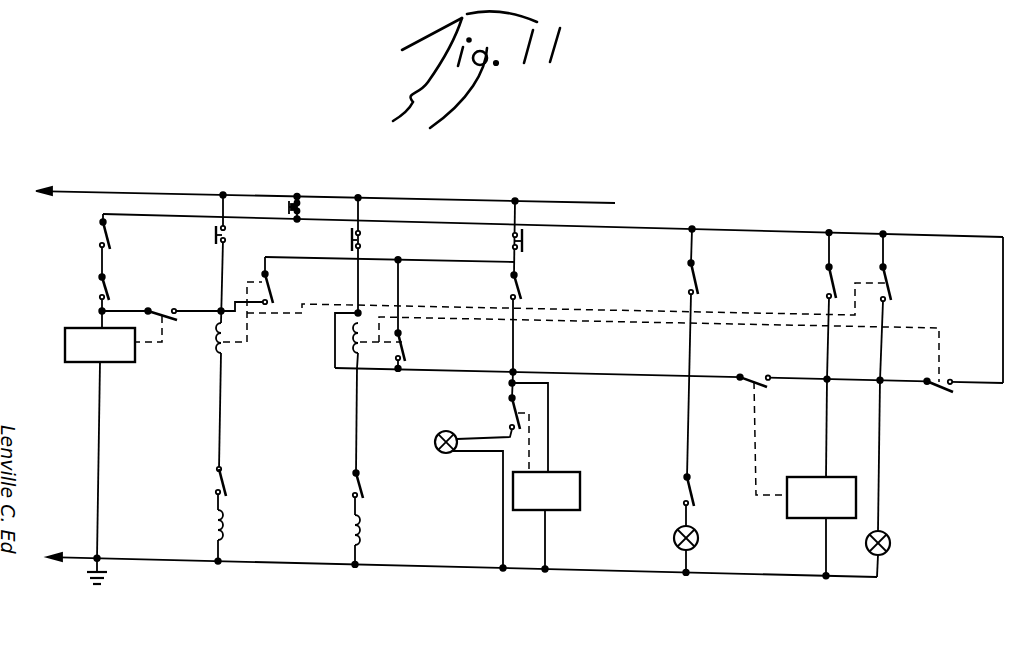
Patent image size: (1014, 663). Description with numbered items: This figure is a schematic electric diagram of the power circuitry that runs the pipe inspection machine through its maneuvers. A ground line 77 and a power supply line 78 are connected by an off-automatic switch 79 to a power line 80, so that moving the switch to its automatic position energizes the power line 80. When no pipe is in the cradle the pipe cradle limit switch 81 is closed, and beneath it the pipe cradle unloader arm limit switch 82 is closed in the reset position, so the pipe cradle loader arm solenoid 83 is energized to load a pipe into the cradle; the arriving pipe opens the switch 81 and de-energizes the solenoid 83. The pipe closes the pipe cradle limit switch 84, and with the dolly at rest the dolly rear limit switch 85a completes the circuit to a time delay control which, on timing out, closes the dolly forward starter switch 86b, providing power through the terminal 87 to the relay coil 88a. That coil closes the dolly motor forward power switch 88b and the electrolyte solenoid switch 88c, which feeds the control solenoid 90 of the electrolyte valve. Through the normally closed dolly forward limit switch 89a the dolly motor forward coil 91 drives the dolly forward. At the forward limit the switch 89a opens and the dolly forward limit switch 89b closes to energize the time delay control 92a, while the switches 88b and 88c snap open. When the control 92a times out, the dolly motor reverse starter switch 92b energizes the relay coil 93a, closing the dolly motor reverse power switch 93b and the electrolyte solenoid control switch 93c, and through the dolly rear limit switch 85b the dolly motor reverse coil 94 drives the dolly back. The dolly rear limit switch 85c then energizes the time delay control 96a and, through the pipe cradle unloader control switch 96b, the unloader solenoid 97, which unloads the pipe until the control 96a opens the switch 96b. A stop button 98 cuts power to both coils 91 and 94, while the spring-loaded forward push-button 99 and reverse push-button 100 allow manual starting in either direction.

The ground line 77 is at (163, 563).
The power supply line 78 is at (312, 190).
The off-automatic switch 79 is at (287, 205).
The power line 80 is at (126, 204).
The pipe cradle limit switch 81 is at (688, 283).
The pipe cradle unloader arm limit switch 82 is at (696, 492).
The pipe cradle loader arm solenoid 83 is at (672, 542).
The pipe cradle limit switch 84 is at (98, 239).
The dolly rear limit switch 85a is at (98, 285).
The dolly rear limit switch 85b is at (366, 487).
The dolly rear limit switch 85c is at (524, 291).
The dolly forward starter switch 86b is at (176, 327).
The terminal 87 is at (220, 308).
The relay coil 88a is at (226, 349).
The dolly motor forward power switch 88b is at (276, 281).
The electrolyte solenoid switch 88c is at (894, 285).
The dolly forward limit switch 89a is at (225, 483).
The dolly forward limit switch 89b is at (824, 283).
The control solenoid 90 is at (891, 546).
The dolly motor forward coil 91 is at (228, 530).
The time delay control 92a is at (811, 521).
The dolly motor reverse starter switch 92b is at (763, 373).
The relay coil 93a is at (335, 342).
The dolly motor reverse power switch 93b is at (409, 346).
The electrolyte solenoid control switch 93c is at (937, 398).
The dolly motor reverse coil 94 is at (364, 536).
The time delay control 96a is at (580, 492).
The pipe cradle unloader control switch 96b is at (508, 410).
The unloader solenoid 97 is at (434, 441).
The stop button 98 is at (511, 241).
The forward push-button 99 is at (212, 234).
The reverse push-button 100 is at (350, 240).